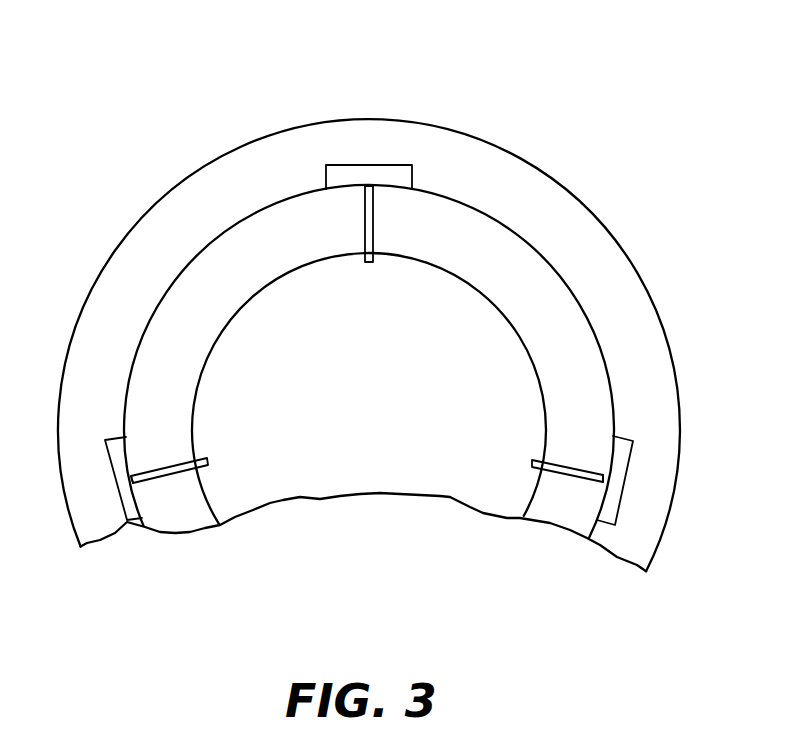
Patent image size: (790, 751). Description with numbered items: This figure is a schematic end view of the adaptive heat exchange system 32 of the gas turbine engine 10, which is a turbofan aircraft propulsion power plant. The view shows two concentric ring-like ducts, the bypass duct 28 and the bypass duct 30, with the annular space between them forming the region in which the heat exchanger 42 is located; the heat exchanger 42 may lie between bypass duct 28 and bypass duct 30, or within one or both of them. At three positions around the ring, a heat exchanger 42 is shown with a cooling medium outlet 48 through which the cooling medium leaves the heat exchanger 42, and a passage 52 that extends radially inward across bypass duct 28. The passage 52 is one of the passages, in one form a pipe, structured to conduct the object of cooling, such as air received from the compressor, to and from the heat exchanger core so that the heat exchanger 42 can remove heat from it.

The gas turbine engine 10 is at (485, 90).
The bypass duct 28 is at (542, 313).
The bypass duct 30 is at (528, 197).
The adaptive heat exchange system 32 is at (272, 553).
The heat exchanger 42 is at (342, 163).
The cooling medium outlet 48 is at (362, 172).
The passage 52 is at (363, 217).